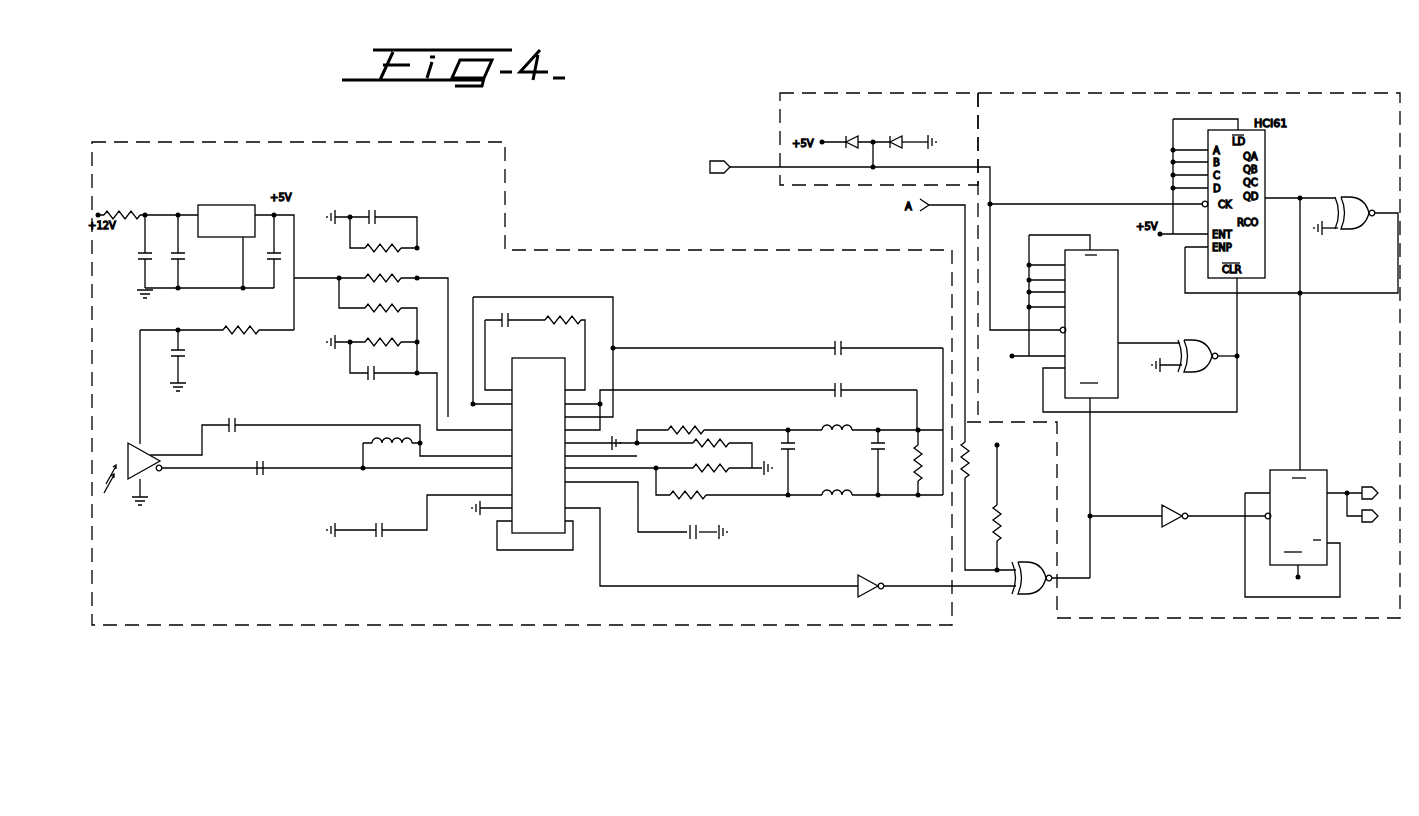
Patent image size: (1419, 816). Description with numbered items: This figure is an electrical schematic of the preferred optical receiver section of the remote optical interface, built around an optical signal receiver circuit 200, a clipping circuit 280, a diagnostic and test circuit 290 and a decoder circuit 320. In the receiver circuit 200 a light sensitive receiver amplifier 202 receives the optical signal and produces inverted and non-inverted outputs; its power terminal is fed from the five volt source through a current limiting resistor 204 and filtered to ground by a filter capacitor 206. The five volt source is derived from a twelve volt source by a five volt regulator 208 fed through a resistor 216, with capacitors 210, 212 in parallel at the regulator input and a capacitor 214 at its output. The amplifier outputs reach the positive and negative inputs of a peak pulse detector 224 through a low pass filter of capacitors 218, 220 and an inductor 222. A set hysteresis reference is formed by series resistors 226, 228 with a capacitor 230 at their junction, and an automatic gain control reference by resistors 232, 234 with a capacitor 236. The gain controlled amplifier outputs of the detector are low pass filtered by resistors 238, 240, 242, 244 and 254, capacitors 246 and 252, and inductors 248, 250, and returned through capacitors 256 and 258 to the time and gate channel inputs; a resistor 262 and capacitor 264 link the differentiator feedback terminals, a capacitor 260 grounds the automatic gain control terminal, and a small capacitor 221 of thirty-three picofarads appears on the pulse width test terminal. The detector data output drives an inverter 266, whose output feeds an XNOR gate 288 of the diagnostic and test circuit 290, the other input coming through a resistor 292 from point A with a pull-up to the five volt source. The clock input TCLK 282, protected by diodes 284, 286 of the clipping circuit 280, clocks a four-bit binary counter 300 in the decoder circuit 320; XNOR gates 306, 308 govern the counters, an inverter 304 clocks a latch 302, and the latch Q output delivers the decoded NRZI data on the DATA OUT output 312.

The optical signal receiver circuit 200 is at (334, 627).
The light sensitive receiver amplifier 202 is at (150, 455).
The current limiting resistor 204 is at (250, 334).
The filter capacitor 206 is at (188, 352).
The five volt regulator 208 is at (248, 205).
The capacitor 210 is at (152, 258).
The capacitor 212 is at (186, 254).
The capacitor 214 is at (282, 256).
The resistor 216 is at (130, 214).
The capacitor 218 is at (242, 418).
The capacitor 220 is at (262, 476).
The capacitor 221 is at (382, 522).
The inductor 222 is at (396, 437).
The peak pulse detector 224 is at (540, 552).
The resistor 226 is at (400, 275).
The resistor 228 is at (400, 244).
The capacitor 230 is at (372, 210).
The resistor 232 is at (400, 305).
The resistor 234 is at (362, 338).
The capacitor 236 is at (360, 380).
The resistor 238 is at (700, 426).
The resistor 240 is at (725, 441).
The resistor 242 is at (728, 470).
The resistor 244 is at (675, 498).
The capacitor 246 is at (784, 455).
The inductor 248 is at (824, 498).
The inductor 250 is at (824, 428).
The capacitor 252 is at (884, 455).
The resistor 254 is at (924, 470).
The capacitor 256 is at (846, 387).
The capacitor 258 is at (846, 345).
The capacitor 260 is at (712, 538).
The resistor 262 is at (580, 316).
The capacitor 264 is at (504, 326).
The inverter 266 is at (880, 576).
The clipping circuit 280 is at (857, 88).
The clock input TCLK 282 is at (724, 174).
The diode 284 is at (868, 162).
The diode 286 is at (896, 148).
The XNOR gate 288 is at (1052, 560).
The diagnostic and test circuit 290 is at (1003, 508).
The resistor 292 is at (1000, 466).
The four-bit binary counter 300 is at (1118, 292).
The latch 302 is at (1305, 470).
The inverter 304 is at (1174, 505).
The XNOR gate 306 is at (1197, 374).
The XNOR gate 308 is at (1348, 198).
The DATA OUT output 312 is at (1349, 489).
The decoder circuit 320 is at (1119, 92).